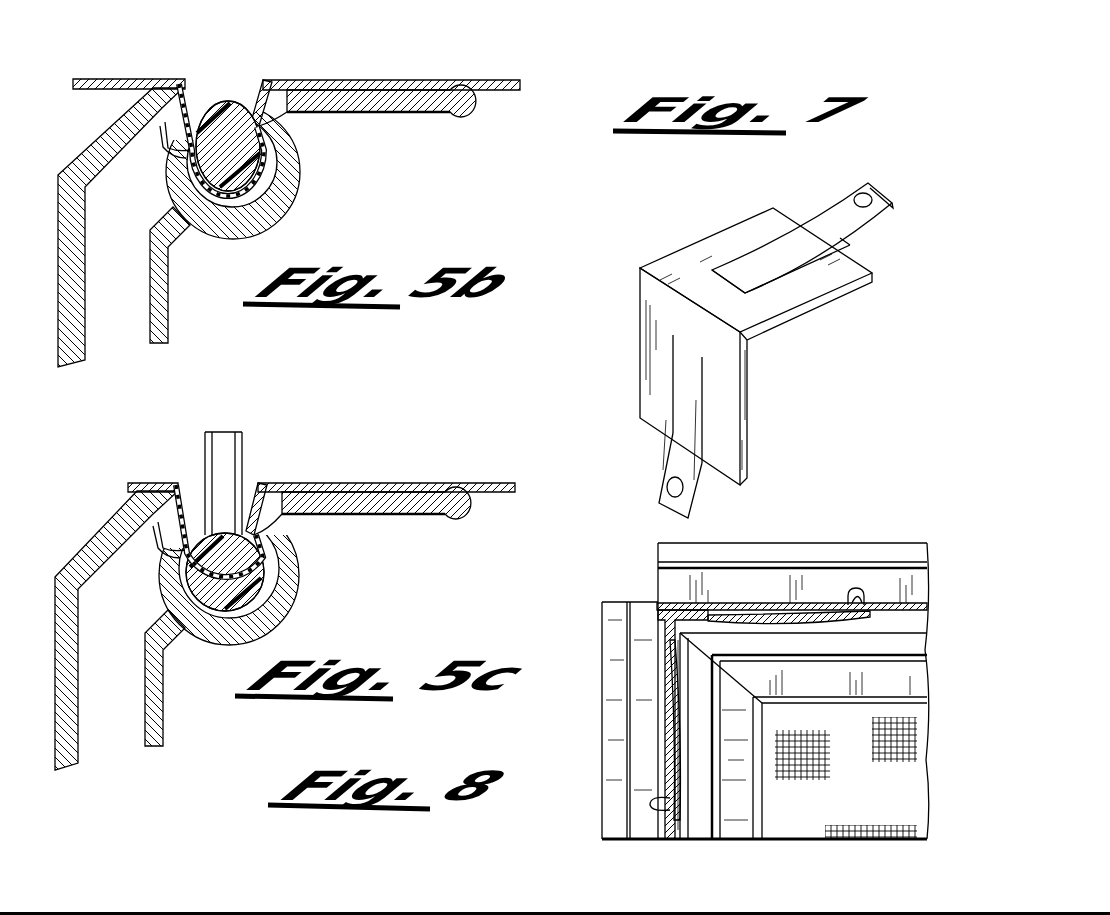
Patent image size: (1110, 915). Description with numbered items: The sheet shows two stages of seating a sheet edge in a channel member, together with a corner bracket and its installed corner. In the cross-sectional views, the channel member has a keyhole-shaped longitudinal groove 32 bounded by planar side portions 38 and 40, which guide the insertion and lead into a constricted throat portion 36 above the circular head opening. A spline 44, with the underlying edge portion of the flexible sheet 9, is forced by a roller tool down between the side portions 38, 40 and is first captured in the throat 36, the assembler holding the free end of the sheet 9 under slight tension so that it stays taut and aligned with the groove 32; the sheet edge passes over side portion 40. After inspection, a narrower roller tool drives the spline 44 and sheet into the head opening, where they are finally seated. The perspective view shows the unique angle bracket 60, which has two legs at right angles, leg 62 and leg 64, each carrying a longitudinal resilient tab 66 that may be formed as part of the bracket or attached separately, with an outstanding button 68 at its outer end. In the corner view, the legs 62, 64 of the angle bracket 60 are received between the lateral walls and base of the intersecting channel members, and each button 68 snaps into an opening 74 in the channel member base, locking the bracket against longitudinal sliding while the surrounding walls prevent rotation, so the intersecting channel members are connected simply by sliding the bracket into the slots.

In FIG. 5B, the flexible sheet 9 is at (503, 92).
In FIG. 5C, the flexible sheet 9 is at (498, 495).
In FIG. 5B, the longitudinal groove 32 is at (245, 203).
In FIG. 5C, the longitudinal groove 32 is at (283, 595).
In FIG. 5B, the constricted throat portion 36 is at (185, 155).
In FIG. 5C, the constricted throat portion 36 is at (183, 550).
In FIG. 5B, the planar side portion 38 is at (193, 118).
In FIG. 5C, the planar side portion 38 is at (187, 510).
In FIG. 5B, the planar side portion 40 is at (283, 118).
In FIG. 5C, the planar side portion 40 is at (275, 520).
In FIG. 5B, the spline 44 is at (248, 172).
In FIG. 5C, the spline 44 is at (250, 566).
In FIG. 7, the angle bracket 60 is at (628, 337).
In FIG. 8, the angle bracket 60 is at (658, 635).
In FIG. 7, the leg 62 is at (727, 422).
In FIG. 8, the leg 62 is at (673, 688).
In FIG. 7, the leg 64 is at (820, 300).
In FIG. 8, the leg 64 is at (743, 617).
In FIG. 7, the resilient tab 66 is at (820, 232).
In FIG. 8, the resilient tab 66 is at (817, 617).
In FIG. 7, the button 68 is at (868, 192).
In FIG. 8, the button 68 is at (853, 597).
In FIG. 8, the opening 74 is at (860, 603).